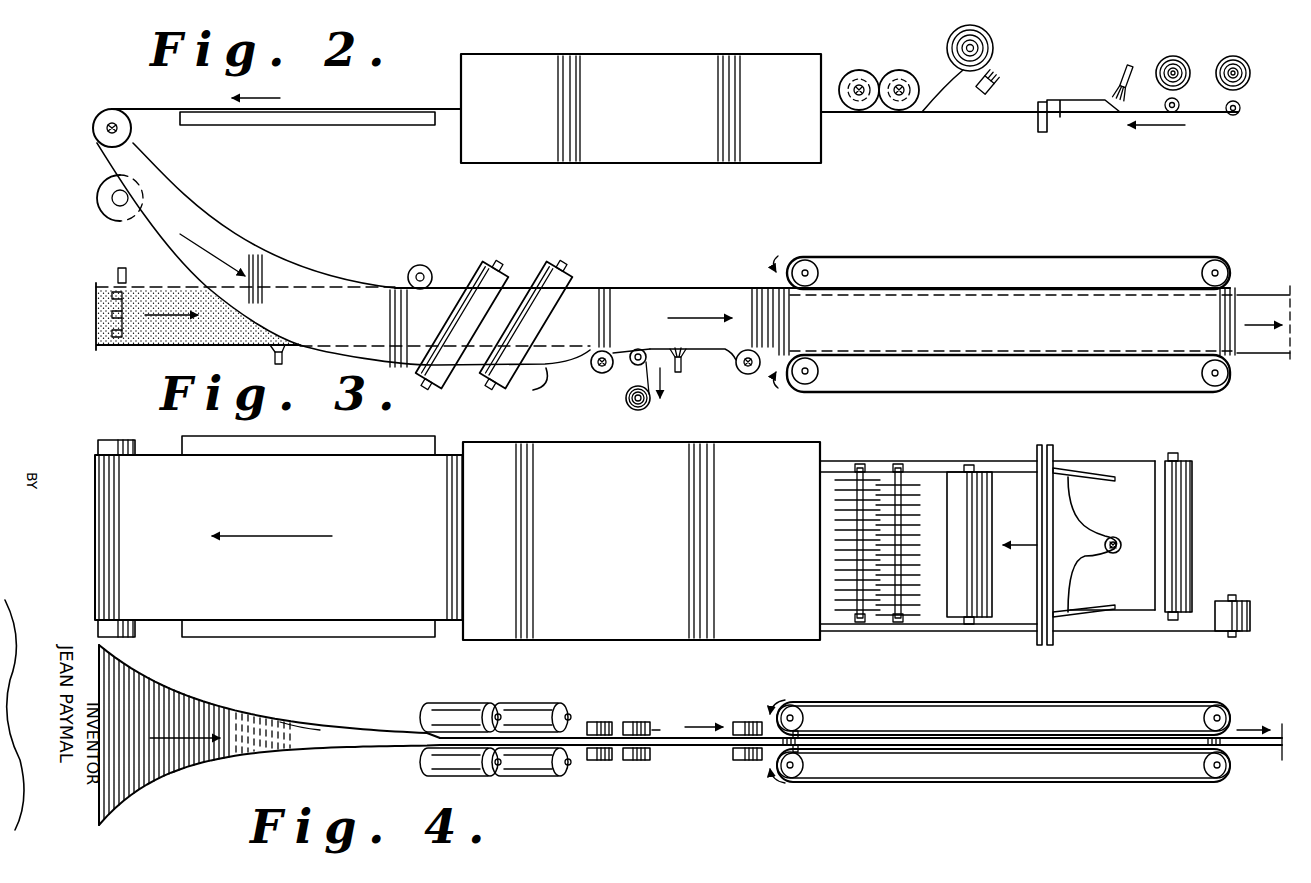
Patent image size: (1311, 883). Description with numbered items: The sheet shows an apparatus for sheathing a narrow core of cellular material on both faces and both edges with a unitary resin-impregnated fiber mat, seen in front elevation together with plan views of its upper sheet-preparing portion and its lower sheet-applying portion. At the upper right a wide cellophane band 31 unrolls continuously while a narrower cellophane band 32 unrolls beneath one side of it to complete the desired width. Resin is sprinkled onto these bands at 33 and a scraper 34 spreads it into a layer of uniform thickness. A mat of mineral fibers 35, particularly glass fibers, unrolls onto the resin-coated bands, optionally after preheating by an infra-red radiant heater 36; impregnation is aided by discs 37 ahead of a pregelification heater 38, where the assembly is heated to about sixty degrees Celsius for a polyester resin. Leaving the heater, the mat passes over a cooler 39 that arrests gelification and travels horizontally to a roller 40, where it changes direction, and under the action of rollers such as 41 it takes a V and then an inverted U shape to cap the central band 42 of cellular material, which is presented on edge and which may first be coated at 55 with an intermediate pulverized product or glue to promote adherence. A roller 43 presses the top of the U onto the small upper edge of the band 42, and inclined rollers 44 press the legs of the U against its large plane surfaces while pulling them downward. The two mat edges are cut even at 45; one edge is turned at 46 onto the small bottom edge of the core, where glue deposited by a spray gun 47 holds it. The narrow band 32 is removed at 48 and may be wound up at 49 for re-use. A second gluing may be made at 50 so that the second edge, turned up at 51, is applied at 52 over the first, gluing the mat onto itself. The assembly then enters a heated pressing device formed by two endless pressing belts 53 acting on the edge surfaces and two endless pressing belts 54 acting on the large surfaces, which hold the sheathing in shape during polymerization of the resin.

In FIG. 2, the cellophane band 31 is at (1188, 84).
In FIG. 3, the cellophane band 31 is at (1140, 492).
In FIG. 4, the cellophane band 31 is at (287, 728).
In FIG. 2, the cellophane band of small width 32 is at (1246, 86).
In FIG. 3, the cellophane band of small width 32 is at (1193, 612).
In FIG. 2, the resin sprinkling station 33 is at (1120, 79).
In FIG. 3, the resin sprinkling station 33 is at (1113, 553).
In FIG. 2, the scraper 34 is at (1063, 118).
In FIG. 3, the scraper 34 is at (1055, 470).
In FIG. 2, the mat of mineral fibers 35 is at (948, 102).
In FIG. 3, the mat of mineral fibers 35 is at (933, 603).
In FIG. 2, the infra-red radiant heater 36 is at (995, 90).
In FIG. 2, the discs 37 is at (893, 72).
In FIG. 3, the discs 37 is at (896, 624).
In FIG. 2, the pregelification heater 38 is at (647, 143).
In FIG. 3, the pregelification heater 38 is at (567, 627).
In FIG. 2, the cooler 39 is at (293, 118).
In FIG. 3, the cooler 39 is at (358, 627).
In FIG. 2, the roller 40 is at (105, 122).
In FIG. 3, the roller 40 is at (105, 446).
In FIG. 2, the rollers 41 is at (97, 196).
In FIG. 2, the central band of cellular material 42 is at (200, 333).
In FIG. 2, the roller 43 is at (414, 266).
In FIG. 2, the rollers 44 is at (547, 276).
In FIG. 4, the rollers 44 is at (533, 764).
In FIG. 2, the cutting station 45 is at (524, 391).
In FIG. 2, the edge turning station 46 is at (596, 371).
In FIG. 4, the edge turning station 46 is at (603, 761).
In FIG. 2, the spray gun 47 is at (285, 350).
In FIG. 2, the band removal station 48 is at (643, 349).
In FIG. 4, the band removal station 48 is at (636, 722).
In FIG. 2, the winding station 49 is at (628, 404).
In FIG. 4, the winding station 49 is at (656, 730).
In FIG. 2, the second gluing station 50 is at (681, 372).
In FIG. 2, the second edge turning station 51 is at (723, 356).
In FIG. 2, the application station 52 is at (757, 373).
In FIG. 4, the application station 52 is at (745, 761).
In FIG. 2, the endless pressing belts 53 is at (1012, 257).
In FIG. 4, the endless pressing belts 53 is at (965, 745).
In FIG. 2, the endless pressing belts 54 is at (790, 318).
In FIG. 4, the endless pressing belts 54 is at (1095, 704).
In FIG. 2, the intermediate pulverized product application station 55 is at (110, 333).